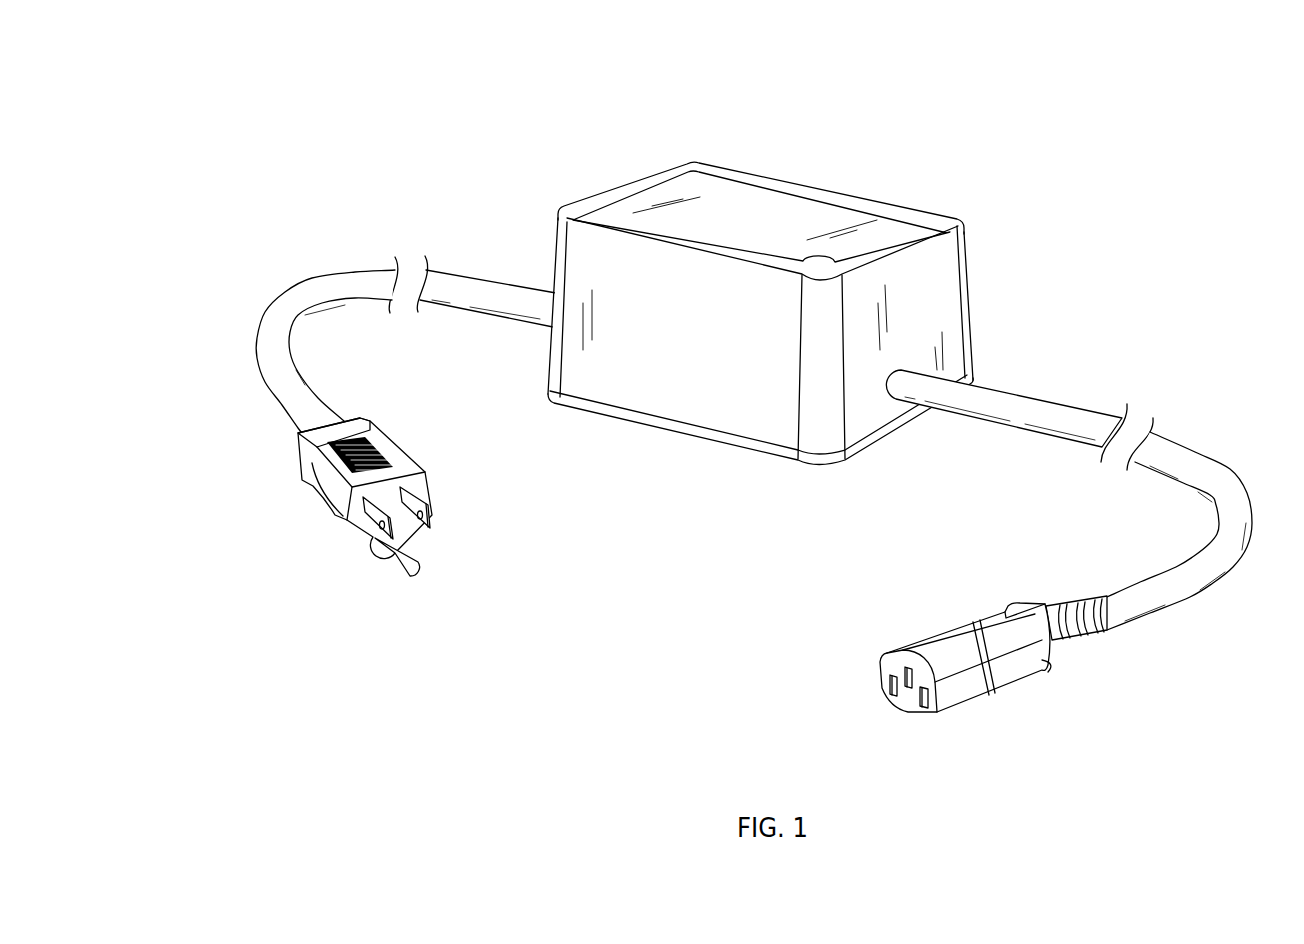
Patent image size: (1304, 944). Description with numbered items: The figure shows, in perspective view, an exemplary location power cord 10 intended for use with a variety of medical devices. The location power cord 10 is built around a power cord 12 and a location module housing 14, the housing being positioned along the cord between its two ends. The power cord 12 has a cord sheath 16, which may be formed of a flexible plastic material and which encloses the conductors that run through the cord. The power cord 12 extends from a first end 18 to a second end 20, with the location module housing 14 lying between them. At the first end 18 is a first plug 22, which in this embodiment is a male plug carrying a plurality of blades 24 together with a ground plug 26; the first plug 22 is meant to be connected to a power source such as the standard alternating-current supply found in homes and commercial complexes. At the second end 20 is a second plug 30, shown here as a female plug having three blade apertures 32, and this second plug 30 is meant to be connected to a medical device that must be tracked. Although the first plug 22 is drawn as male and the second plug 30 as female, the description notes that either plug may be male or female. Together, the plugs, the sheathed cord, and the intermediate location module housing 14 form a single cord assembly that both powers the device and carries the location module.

The location power cord 10 is at (714, 394).
The power cord 12 is at (406, 347).
The location module housing 14 is at (1000, 264).
The cord sheath 16 is at (1230, 493).
The first end 18 is at (333, 514).
The second end 20 is at (1018, 674).
The first plug 22 is at (314, 550).
The blades 24 is at (433, 515).
The ground plug 26 is at (418, 565).
The second plug 30 is at (1027, 719).
The blade apertures 32 is at (916, 705).